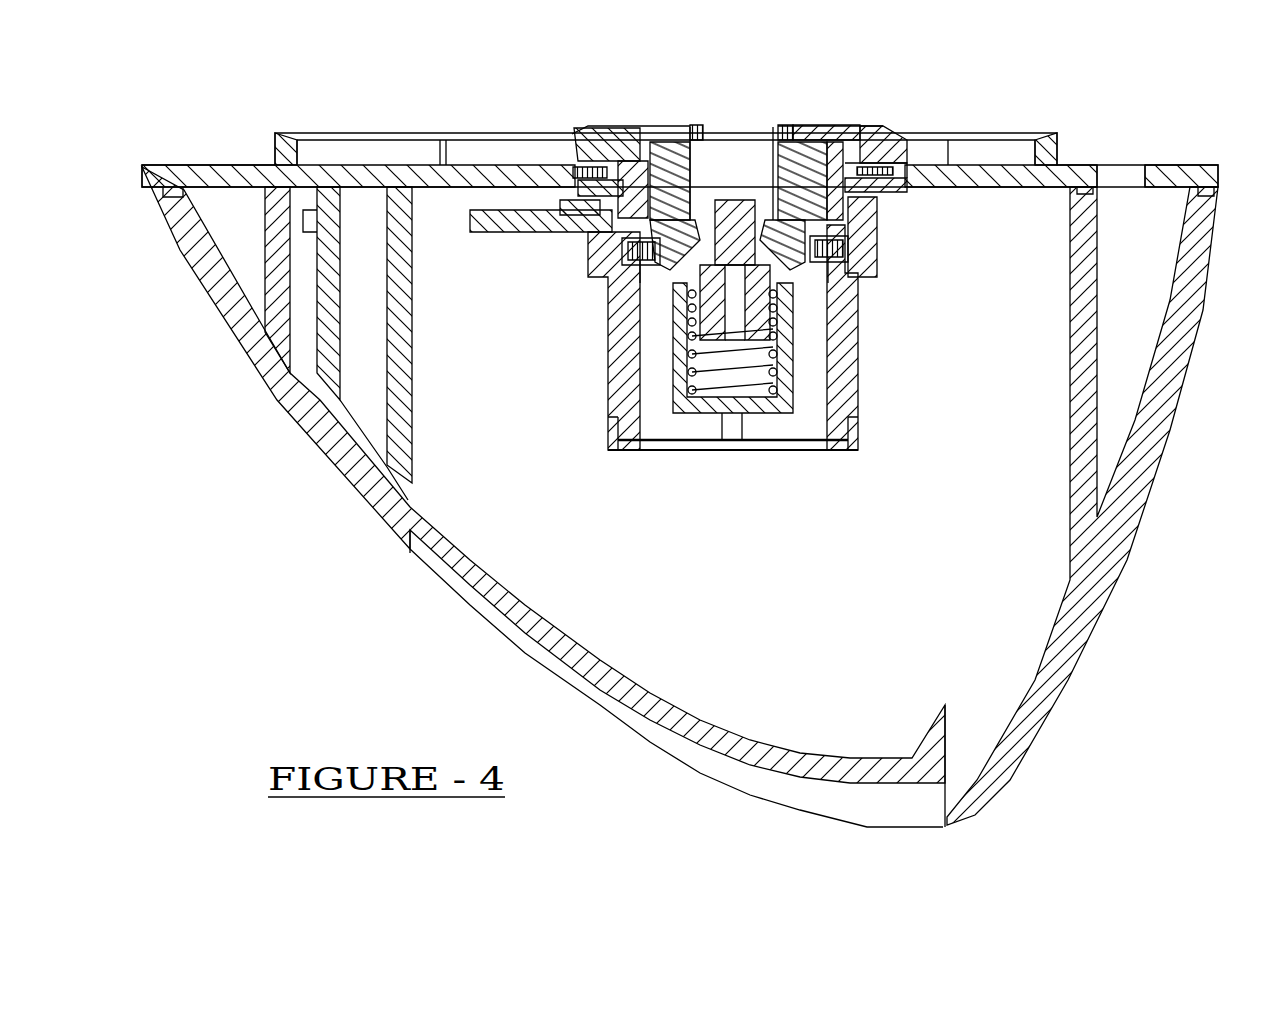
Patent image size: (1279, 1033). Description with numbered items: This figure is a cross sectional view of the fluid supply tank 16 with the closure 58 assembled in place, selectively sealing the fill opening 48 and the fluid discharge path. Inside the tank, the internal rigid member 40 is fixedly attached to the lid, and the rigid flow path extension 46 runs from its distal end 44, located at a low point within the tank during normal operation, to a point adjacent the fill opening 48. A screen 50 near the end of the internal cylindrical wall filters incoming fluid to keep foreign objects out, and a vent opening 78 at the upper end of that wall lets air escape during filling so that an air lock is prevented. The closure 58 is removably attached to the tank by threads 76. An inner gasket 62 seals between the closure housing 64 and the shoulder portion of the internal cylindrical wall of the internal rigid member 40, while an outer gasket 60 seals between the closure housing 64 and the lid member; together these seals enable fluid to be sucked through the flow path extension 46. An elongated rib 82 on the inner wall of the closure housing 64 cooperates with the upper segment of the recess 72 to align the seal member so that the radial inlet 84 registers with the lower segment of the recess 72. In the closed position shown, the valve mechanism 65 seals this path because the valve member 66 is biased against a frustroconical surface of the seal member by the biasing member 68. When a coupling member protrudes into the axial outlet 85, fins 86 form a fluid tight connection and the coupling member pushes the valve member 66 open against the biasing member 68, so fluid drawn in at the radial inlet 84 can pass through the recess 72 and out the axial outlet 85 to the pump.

The fluid supply tank 16 is at (1163, 392).
The internal rigid member 40 is at (562, 381).
The distal end 44 is at (350, 443).
The rigid flow path extension 46 is at (365, 225).
The fill opening 48 is at (850, 368).
The screen 50 is at (810, 445).
The closure 58 is at (823, 105).
The outer gasket 60 is at (587, 125).
The inner gasket 62 is at (865, 282).
The closure housing 64 is at (880, 125).
The valve mechanism 65 is at (850, 251).
The valve member 66 is at (768, 255).
The biasing member 68 is at (753, 378).
The recess 72 is at (645, 268).
The threads 76 is at (585, 175).
The vent opening 78 is at (885, 195).
The elongated rib 82 is at (618, 170).
The radial inlet 84 is at (600, 207).
The axial outlet 85 is at (715, 240).
The fins 86 is at (690, 225).